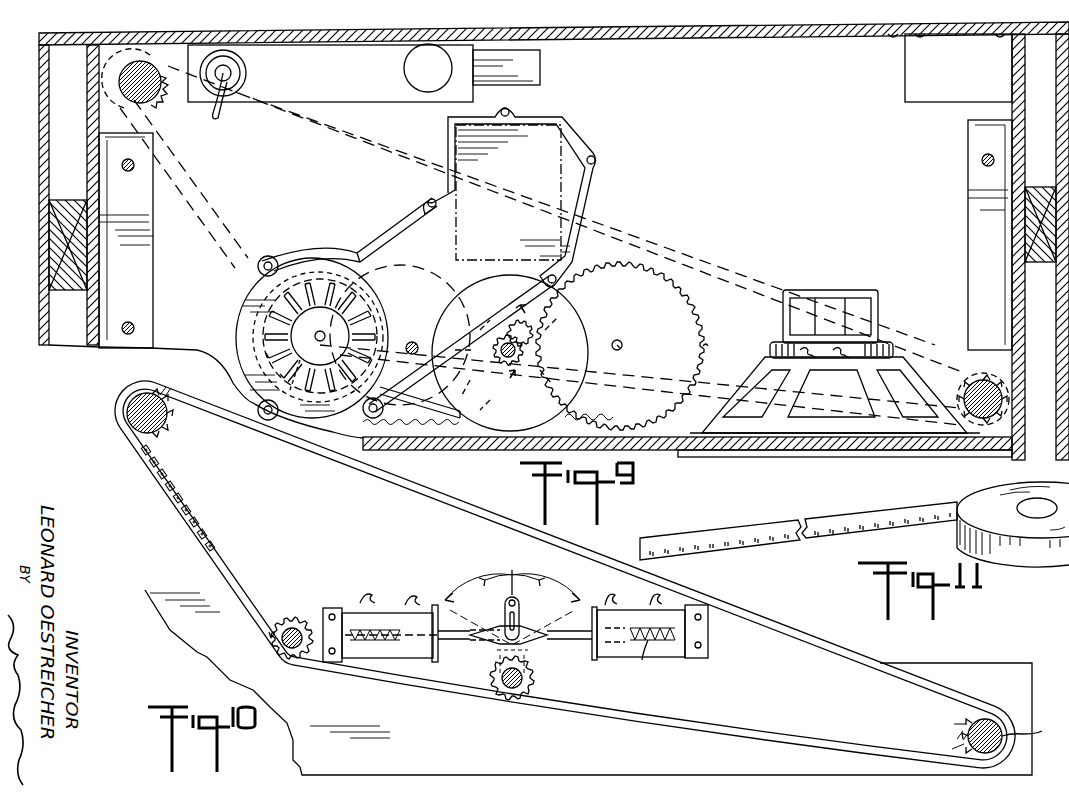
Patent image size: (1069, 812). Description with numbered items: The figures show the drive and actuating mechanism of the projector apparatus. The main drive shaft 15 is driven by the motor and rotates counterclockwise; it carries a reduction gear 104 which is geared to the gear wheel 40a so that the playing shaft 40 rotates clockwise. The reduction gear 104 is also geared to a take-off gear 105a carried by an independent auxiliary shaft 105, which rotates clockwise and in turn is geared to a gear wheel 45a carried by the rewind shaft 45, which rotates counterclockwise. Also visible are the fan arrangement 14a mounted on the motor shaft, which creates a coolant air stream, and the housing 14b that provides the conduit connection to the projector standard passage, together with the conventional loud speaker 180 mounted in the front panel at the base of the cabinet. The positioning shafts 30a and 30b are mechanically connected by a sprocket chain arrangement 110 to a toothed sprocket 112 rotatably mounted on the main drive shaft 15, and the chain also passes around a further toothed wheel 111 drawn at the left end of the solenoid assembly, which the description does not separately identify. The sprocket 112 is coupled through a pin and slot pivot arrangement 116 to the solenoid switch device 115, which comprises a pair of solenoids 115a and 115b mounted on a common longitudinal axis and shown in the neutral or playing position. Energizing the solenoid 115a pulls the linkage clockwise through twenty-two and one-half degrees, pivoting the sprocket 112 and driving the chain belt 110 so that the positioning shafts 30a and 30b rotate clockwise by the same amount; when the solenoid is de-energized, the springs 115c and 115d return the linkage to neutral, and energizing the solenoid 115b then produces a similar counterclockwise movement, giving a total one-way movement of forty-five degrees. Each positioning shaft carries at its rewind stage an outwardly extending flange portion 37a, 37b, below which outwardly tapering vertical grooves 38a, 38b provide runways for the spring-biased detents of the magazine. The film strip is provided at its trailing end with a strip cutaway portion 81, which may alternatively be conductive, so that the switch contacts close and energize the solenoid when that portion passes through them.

In FIG. 9, the fan arrangement 14a is at (348, 252).
In FIG. 9, the housing 14b is at (308, 252).
In FIG. 9, the main drive shaft 15 is at (480, 352).
In FIG. 9, the positioning shaft 30a is at (1002, 399).
In FIG. 10, the positioning shaft 30a is at (1035, 727).
In FIG. 9, the positioning shaft 30b is at (152, 100).
In FIG. 10, the flange portion 37a is at (966, 722).
In FIG. 10, the flange portion 37b is at (167, 417).
In FIG. 10, the vertical groove 38a is at (957, 739).
In FIG. 10, the vertical groove 38b is at (160, 396).
In FIG. 9, the playing shaft 40 is at (412, 342).
In FIG. 9, the gear wheel 40a is at (455, 420).
In FIG. 9, the rewind shaft 45 is at (620, 346).
In FIG. 9, the gear wheel 45a is at (706, 347).
In FIG. 11, the strip cutaway portion 81 is at (940, 506).
In FIG. 9, the reduction gear 104 is at (528, 350).
In FIG. 9, the auxiliary shaft 105 is at (492, 301).
In FIG. 9, the take-off gear 105a is at (531, 325).
In FIG. 10, the sprocket chain arrangement 110 is at (792, 738).
In FIG. 10, the gear 111 is at (300, 618).
In FIG. 10, the sprocket 112 is at (535, 688).
In FIG. 10, the solenoid switch device 115 is at (715, 661).
In FIG. 10, the solenoid 115a is at (622, 598).
In FIG. 10, the solenoid 115b is at (391, 628).
In FIG. 10, the spring 115c is at (662, 659).
In FIG. 10, the spring 115d is at (380, 658).
In FIG. 10, the pin and slot pivot arrangement 116 is at (525, 608).
In FIG. 9, the loud speaker 180 is at (890, 345).